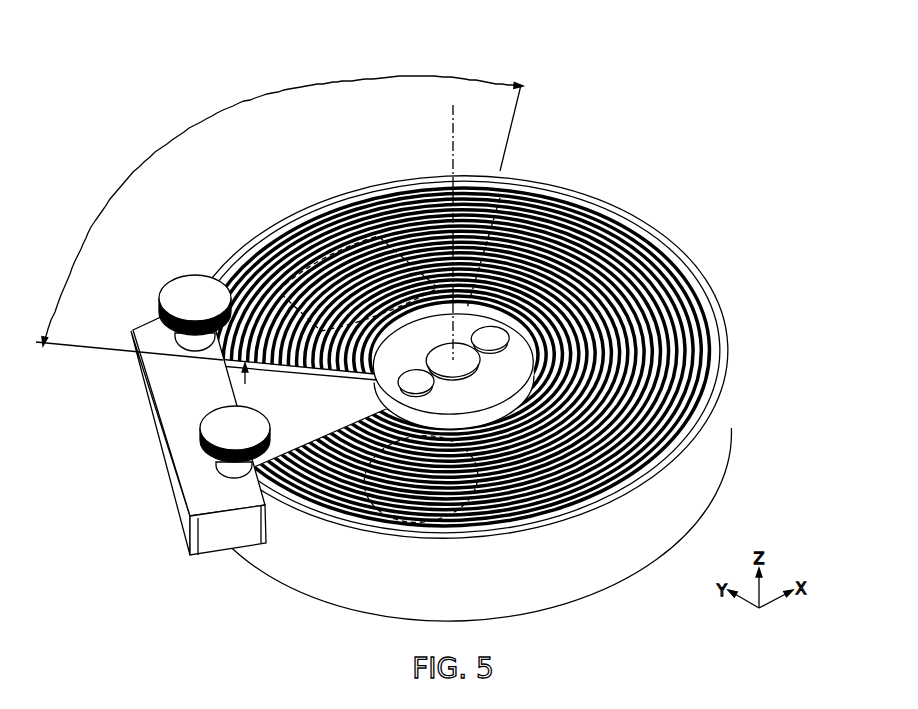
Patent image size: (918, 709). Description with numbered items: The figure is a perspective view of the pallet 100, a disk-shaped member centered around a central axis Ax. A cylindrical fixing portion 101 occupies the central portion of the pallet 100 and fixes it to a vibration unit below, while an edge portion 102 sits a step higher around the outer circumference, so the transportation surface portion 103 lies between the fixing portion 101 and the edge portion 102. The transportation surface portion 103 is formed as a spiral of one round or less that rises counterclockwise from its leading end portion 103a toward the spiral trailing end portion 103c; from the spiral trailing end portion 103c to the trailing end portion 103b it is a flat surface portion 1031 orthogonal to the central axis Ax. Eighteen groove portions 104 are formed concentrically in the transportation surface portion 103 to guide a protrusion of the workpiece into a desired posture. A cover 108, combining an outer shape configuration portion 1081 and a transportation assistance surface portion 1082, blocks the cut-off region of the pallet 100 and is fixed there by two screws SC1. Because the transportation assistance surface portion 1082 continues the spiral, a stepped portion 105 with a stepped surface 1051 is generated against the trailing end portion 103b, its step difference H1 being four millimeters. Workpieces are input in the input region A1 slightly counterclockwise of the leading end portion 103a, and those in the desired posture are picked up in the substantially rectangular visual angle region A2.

The pallet 100 is at (806, 122).
The fixing portion 101 is at (600, 308).
The edge portion 102 is at (710, 313).
The transportation surface portion 103 is at (663, 341).
The groove portions 104 is at (678, 359).
The stepped portion 105 is at (289, 365).
The stepped surface 1051 is at (341, 366).
The flat surface portion 1031 is at (374, 226).
The leading end portion 103a is at (262, 470).
The trailing end portion 103b is at (250, 396).
The spiral trailing end portion 103c is at (492, 190).
The cover 108 is at (151, 486).
The outer shape configuration portion 1081 is at (180, 447).
The transportation assistance surface portion 1082 is at (222, 417).
The screws SC1 is at (182, 292).
The step difference H1 is at (230, 368).
The input region A1 is at (430, 514).
The visual angle region A2 is at (338, 240).
The central axis Ax is at (443, 128).